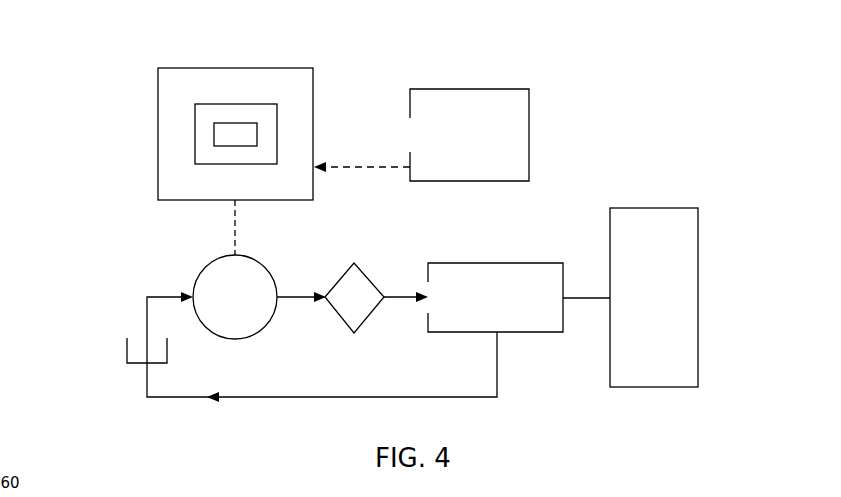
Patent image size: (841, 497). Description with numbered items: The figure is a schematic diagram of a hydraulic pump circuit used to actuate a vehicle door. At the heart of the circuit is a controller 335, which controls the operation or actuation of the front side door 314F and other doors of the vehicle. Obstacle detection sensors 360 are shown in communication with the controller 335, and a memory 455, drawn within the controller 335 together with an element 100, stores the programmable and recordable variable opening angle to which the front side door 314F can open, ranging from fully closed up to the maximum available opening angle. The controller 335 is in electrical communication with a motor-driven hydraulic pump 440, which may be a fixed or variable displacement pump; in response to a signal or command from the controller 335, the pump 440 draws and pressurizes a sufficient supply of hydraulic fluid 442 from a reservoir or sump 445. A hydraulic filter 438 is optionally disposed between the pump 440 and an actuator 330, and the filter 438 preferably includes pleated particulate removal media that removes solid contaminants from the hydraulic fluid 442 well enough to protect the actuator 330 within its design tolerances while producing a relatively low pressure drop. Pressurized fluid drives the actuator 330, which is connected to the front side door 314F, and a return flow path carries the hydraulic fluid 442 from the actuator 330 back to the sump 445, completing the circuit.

The controller 335 is at (266, 68).
The memory 455 is at (195, 137).
The device / sample 100 is at (257, 135).
The obstacle detection sensors 360 is at (529, 105).
The motor-driven hydraulic pump 440 is at (260, 262).
The hydraulic filter 438 is at (367, 275).
The actuator 330 is at (466, 263).
The front side door 314F is at (698, 258).
The hydraulic fluid 442 is at (497, 370).
The reservoir or sump 445 is at (127, 348).